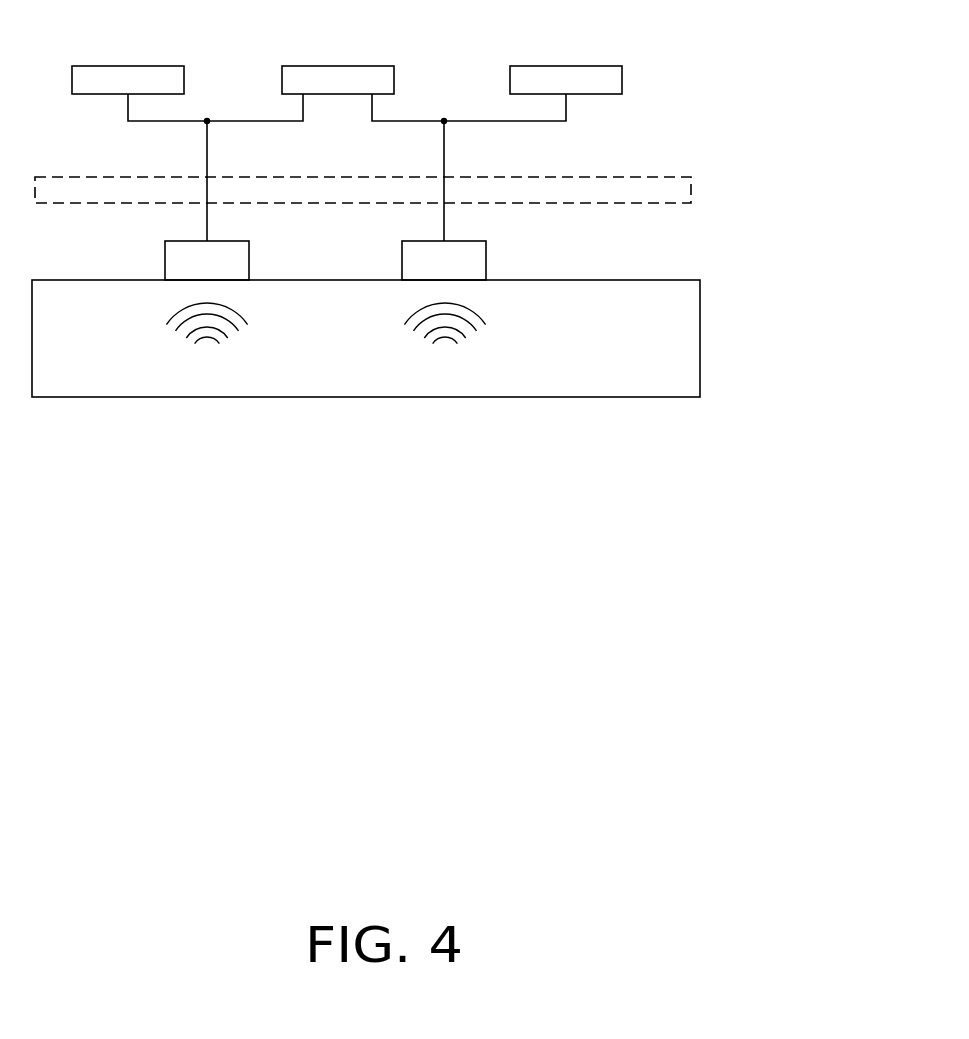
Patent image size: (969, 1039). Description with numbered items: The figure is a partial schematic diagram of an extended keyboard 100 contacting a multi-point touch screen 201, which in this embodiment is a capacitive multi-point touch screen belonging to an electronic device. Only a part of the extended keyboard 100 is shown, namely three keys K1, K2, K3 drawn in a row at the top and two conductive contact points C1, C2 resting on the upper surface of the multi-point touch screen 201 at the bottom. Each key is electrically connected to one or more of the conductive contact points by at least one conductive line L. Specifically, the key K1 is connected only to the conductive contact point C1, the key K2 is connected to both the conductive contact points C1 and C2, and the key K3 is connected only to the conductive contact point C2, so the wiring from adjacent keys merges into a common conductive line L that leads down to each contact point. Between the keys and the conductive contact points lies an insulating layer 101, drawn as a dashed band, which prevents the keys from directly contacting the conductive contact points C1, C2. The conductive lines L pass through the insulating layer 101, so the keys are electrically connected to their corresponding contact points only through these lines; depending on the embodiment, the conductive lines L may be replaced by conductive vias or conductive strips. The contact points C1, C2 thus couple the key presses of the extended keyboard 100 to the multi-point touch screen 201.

The key K1 is at (158, 66).
The key K2 is at (369, 66).
The key K3 is at (597, 66).
The conductive line L is at (208, 153).
The conductive contact point C1 is at (207, 260).
The conductive contact point C2 is at (444, 260).
The extended keyboard 100 is at (664, 128).
The insulating layer 101 is at (692, 200).
The multi-point touch screen 201 is at (700, 315).